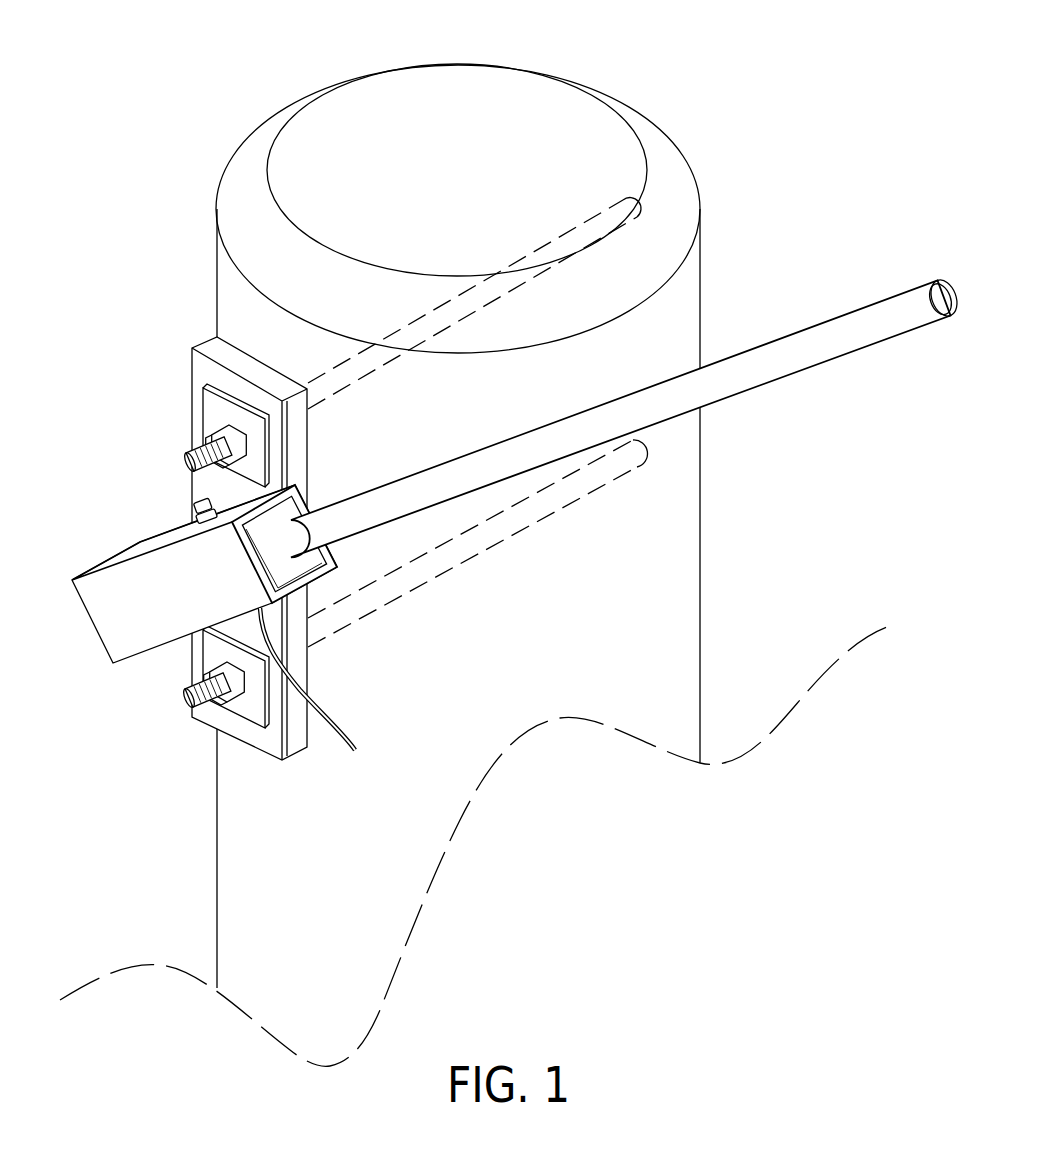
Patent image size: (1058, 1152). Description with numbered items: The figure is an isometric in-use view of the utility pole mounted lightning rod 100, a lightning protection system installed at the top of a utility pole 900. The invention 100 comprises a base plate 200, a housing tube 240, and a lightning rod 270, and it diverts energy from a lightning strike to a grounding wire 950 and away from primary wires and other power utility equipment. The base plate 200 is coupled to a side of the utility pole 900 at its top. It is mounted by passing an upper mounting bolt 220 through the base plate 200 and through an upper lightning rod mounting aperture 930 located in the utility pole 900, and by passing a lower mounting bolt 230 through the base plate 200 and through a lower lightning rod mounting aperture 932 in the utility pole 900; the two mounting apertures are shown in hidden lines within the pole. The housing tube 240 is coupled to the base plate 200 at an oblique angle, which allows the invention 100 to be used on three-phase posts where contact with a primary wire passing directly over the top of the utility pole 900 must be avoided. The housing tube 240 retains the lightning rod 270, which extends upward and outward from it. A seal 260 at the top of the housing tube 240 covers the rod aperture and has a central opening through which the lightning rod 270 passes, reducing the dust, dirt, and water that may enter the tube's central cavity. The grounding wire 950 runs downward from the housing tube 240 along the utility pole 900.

The utility pole mounted lightning rod 100 is at (176, 100).
The base plate 200 is at (193, 370).
The upper mounting bolt 220 is at (183, 468).
The lower mounting bolt 230 is at (185, 703).
The housing tube 240 is at (113, 613).
The seal 260 is at (283, 570).
The lightning rod 270 is at (882, 328).
The utility pole 900 is at (557, 97).
The upper lightning rod mounting aperture 930 is at (640, 212).
The lower lightning rod mounting aperture 932 is at (605, 473).
The grounding wire 950 is at (322, 708).